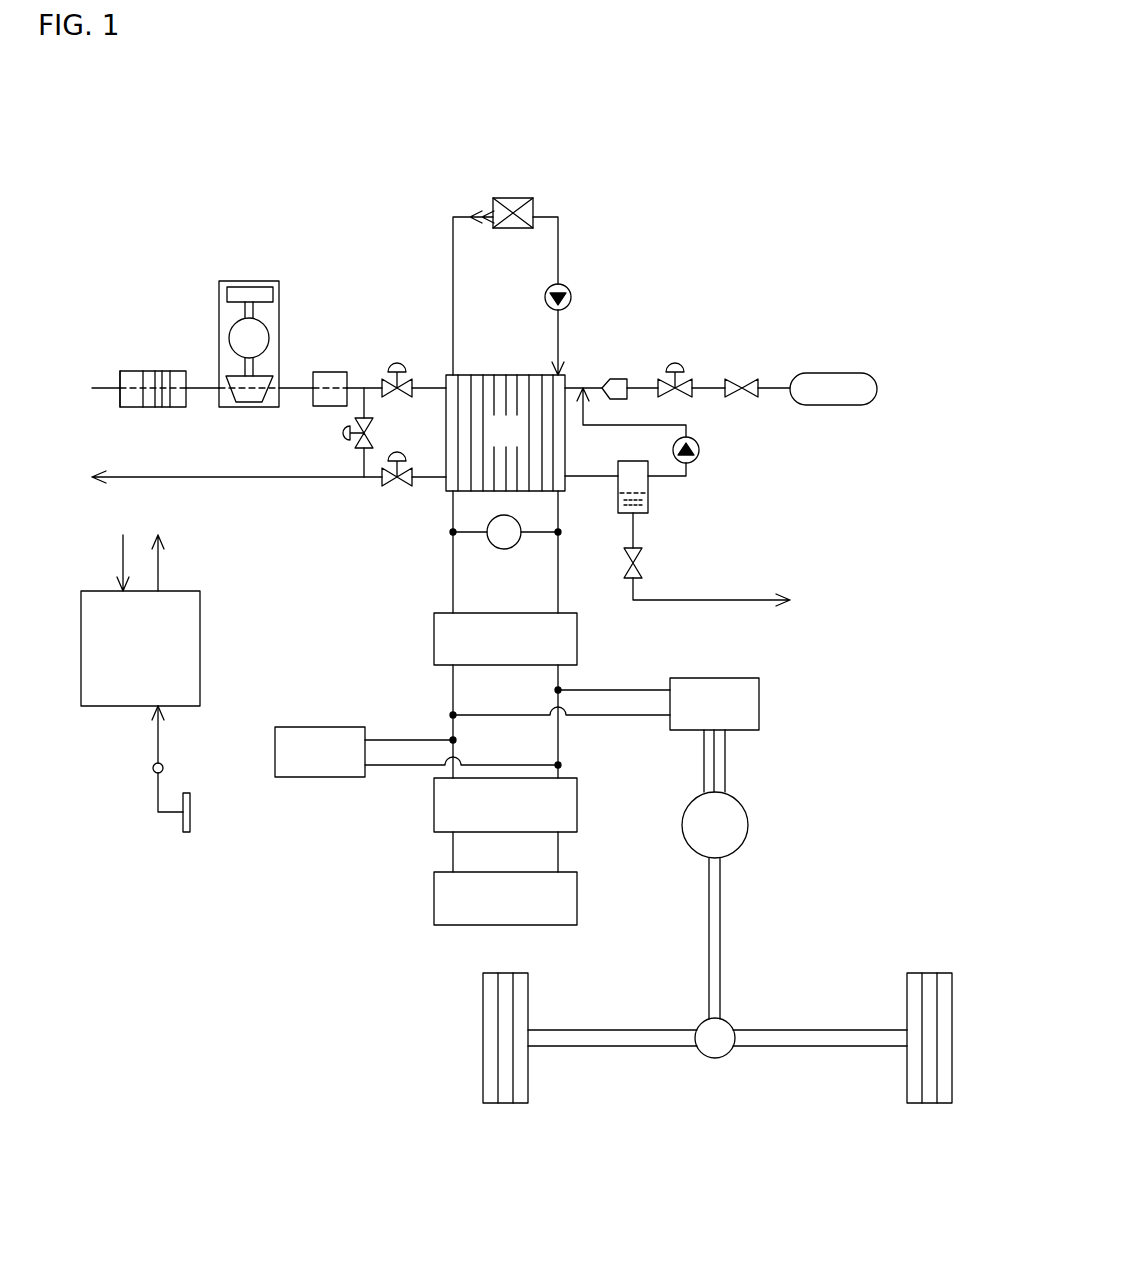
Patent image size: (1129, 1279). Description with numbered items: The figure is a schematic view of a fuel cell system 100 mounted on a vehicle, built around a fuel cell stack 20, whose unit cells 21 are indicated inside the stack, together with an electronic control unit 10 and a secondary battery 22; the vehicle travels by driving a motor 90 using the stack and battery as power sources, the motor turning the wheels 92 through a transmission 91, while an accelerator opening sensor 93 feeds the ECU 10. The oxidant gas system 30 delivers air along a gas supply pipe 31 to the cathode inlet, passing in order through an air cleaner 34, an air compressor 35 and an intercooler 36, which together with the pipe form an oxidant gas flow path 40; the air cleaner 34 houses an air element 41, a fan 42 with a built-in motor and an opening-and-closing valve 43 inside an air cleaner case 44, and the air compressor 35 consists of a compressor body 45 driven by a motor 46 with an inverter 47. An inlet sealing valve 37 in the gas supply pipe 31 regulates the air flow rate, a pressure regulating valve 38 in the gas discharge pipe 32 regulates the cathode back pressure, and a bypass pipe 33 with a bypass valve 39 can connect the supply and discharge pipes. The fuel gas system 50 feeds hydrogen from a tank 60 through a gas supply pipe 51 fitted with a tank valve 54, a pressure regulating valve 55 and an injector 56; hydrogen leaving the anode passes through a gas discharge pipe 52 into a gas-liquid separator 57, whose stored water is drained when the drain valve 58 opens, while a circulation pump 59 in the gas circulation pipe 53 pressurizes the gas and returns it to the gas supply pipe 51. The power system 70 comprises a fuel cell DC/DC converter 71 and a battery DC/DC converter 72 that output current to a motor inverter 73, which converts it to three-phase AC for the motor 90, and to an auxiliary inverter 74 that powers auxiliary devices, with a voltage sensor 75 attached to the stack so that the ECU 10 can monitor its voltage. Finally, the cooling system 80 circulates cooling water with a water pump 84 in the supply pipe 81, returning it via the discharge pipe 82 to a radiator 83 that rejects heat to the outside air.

The electronic control unit (ECU) 10 is at (81, 605).
The fuel cell stack (FC) 20 is at (513, 375).
The unit cell 21 is at (473, 386).
The secondary battery (BAT) 22 is at (434, 898).
The oxidant gas system 30 is at (203, 244).
The gas supply pipe 31 is at (433, 388).
The gas discharge pipe 32 is at (303, 477).
The bypass pipe 33 is at (364, 466).
The air cleaner 34 is at (131, 371).
The air compressor 35 is at (274, 315).
The intercooler 36 is at (330, 372).
The inlet sealing valve 37 is at (397, 364).
The pressure regulating valve 38 is at (397, 486).
The bypass valve 39 is at (343, 433).
The oxidant gas flow path 40 is at (211, 367).
The air element 41 is at (152, 407).
The fan 42 is at (167, 371).
The opening-and-closing valve 43 is at (163, 407).
The air cleaner case 44 is at (128, 407).
The compressor body 45 is at (279, 378).
The motor 46 is at (267, 330).
The inverter 47 is at (279, 300).
The fuel gas system 50 is at (778, 292).
The gas supply pipe 51 is at (707, 388).
The gas discharge pipe 52 is at (633, 530).
The gas circulation pipe 53 is at (690, 476).
The tank valve 54 is at (742, 380).
The pressure regulating valve 55 is at (675, 363).
The injector 56 is at (615, 379).
The gas-liquid separator 57 is at (648, 493).
The drain valve 58 is at (641, 562).
The circulation pump 59 is at (699, 450).
The tank 60 is at (810, 373).
The power system 70 is at (316, 860).
The fuel cell DC/DC converter (FDC) 71 is at (577, 643).
The battery DC/DC converter (BDC) 72 is at (434, 805).
The motor inverter (MINV) 73 is at (730, 678).
The auxiliary inverter (AINV) 74 is at (300, 727).
The voltage sensor 75 is at (521, 522).
The cooling system 80 is at (587, 190).
The supply pipe 81 is at (558, 228).
The discharge pipe 82 is at (453, 232).
The radiator 83 is at (505, 198).
The water pump 84 is at (569, 289).
The motor 90 is at (745, 842).
The transmission 91 is at (722, 1050).
The wheels 92 is at (483, 1070).
The accelerator opening sensor 93 is at (164, 768).
The fuel cell system 100 is at (734, 144).